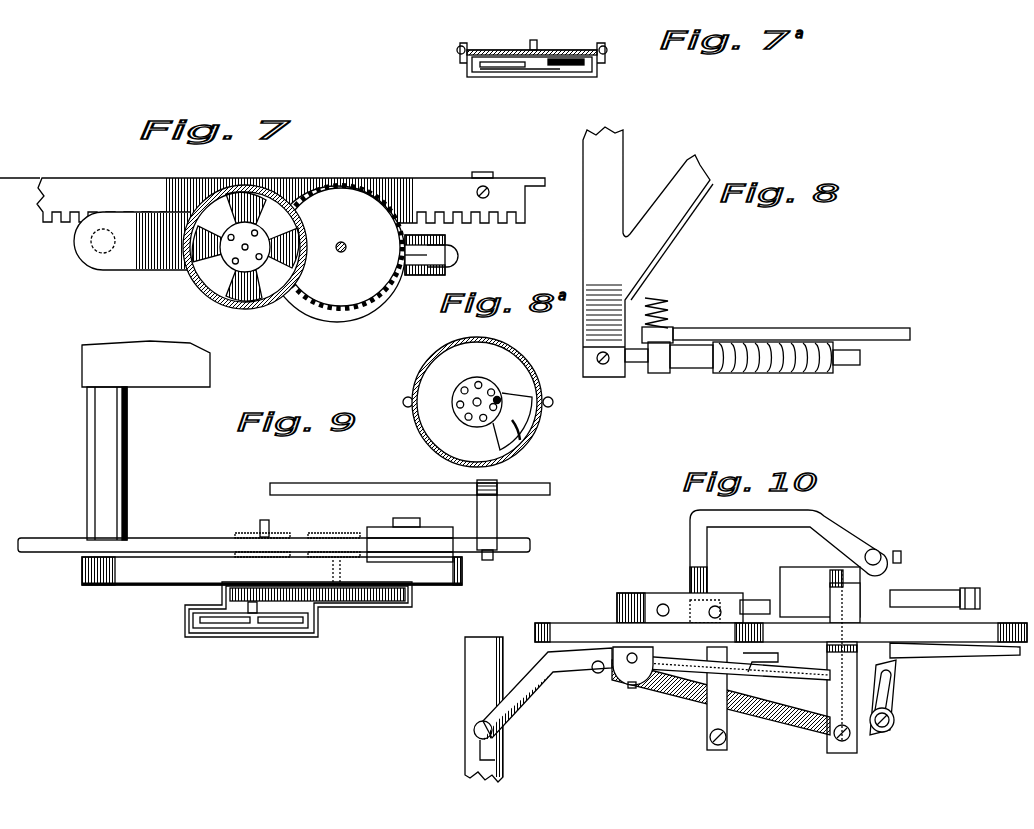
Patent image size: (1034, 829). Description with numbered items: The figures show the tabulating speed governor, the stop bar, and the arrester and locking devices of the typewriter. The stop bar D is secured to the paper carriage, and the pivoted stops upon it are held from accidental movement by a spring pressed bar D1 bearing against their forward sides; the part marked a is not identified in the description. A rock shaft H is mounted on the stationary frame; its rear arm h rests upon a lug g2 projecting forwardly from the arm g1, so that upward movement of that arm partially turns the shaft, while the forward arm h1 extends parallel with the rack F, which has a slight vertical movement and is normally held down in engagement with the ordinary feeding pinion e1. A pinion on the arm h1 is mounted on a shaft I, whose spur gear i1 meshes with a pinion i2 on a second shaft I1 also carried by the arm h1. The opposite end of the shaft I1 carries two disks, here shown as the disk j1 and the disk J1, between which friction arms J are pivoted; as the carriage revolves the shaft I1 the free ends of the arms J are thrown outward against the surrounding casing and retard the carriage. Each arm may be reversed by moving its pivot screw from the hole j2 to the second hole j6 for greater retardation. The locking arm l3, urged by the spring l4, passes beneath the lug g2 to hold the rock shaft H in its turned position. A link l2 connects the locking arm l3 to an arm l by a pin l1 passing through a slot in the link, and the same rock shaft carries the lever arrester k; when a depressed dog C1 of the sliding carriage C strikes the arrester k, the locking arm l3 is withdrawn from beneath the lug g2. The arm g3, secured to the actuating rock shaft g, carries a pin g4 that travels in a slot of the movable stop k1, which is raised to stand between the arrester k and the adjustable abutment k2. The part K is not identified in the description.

In FIG. 7, the rack F is at (522, 203).
In FIG. 7, the arm h1 is at (132, 256).
In FIG. 7, the friction arms J is at (231, 261).
In FIG. 7A, the friction arms J is at (541, 71).
In FIG. 8A, the friction arms J is at (479, 402).
In FIG. 9, the friction arms J is at (234, 627).
In FIG. 7, the disk j1 is at (277, 284).
In FIG. 7A, the disk j1 is at (550, 58).
In FIG. 9, the disk j1 is at (232, 628).
In FIG. 7, the shaft I is at (344, 246).
In FIG. 9, the shaft I is at (337, 535).
In FIG. 7, the spur gear i1 is at (337, 254).
In FIG. 9, the spur gear i1 is at (378, 599).
In FIG. 7A, the hole j2 is at (577, 38).
In FIG. 8A, the hole j2 is at (503, 398).
In FIG. 7A, the disk J1 is at (522, 77).
In FIG. 8A, the disk J1 is at (460, 417).
In FIG. 8, the stop bar D is at (642, 367).
In FIG. 8, the spring pressed bar D1 is at (817, 328).
In FIG. 8, the spring a is at (743, 373).
In FIG. 8A, the hole j6 is at (487, 420).
In FIG. 9, the rock shaft H is at (88, 483).
In FIG. 10, the rock shaft H is at (880, 550).
In FIG. 9, the movable stop k1 is at (182, 562).
In FIG. 10, the movable stop k1 is at (900, 700).
In FIG. 9, the feeding pinion e1 is at (248, 535).
In FIG. 9, the abutment k2 is at (320, 537).
In FIG. 9, the pinion i2 is at (238, 583).
In FIG. 9, the shaft I1 is at (280, 641).
In FIG. 10, the arm h is at (838, 518).
In FIG. 10, the actuating rock shaft g is at (560, 673).
In FIG. 10, the arm g1 is at (652, 600).
In FIG. 10, the lug g2 is at (728, 591).
In FIG. 10, the arm g3 is at (800, 713).
In FIG. 10, the pin g4 is at (883, 732).
In FIG. 10, the arm l is at (833, 668).
In FIG. 10, the pin l1 is at (840, 610).
In FIG. 10, the link l2 is at (766, 612).
In FIG. 10, the locking arm l3 is at (706, 698).
In FIG. 10, the spring l4 is at (728, 663).
In FIG. 10, the bracket K is at (858, 592).
In FIG. 10, the lever arrester k is at (955, 585).
In FIG. 10, the sliding carriage C is at (637, 663).
In FIG. 10, the dog C1 is at (957, 647).